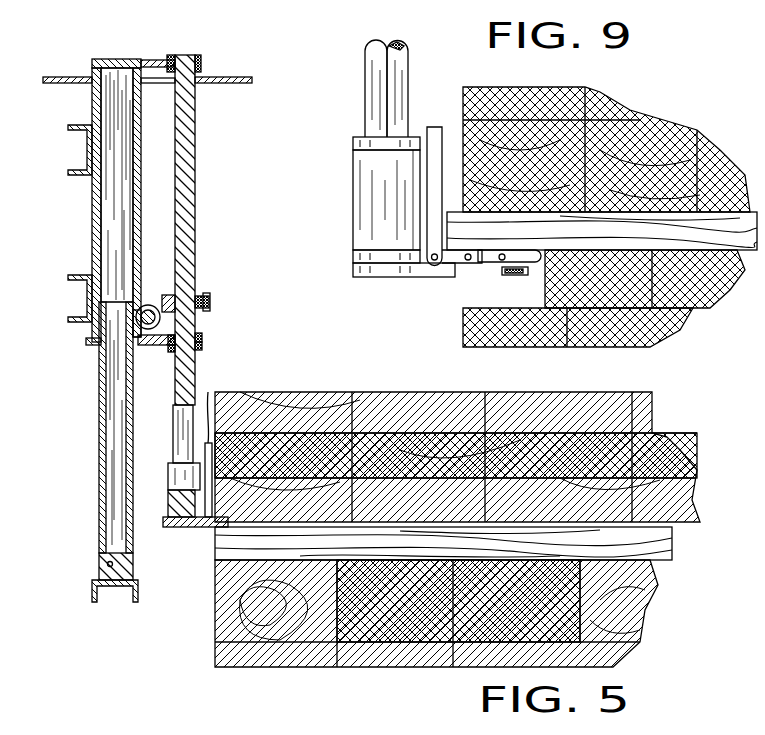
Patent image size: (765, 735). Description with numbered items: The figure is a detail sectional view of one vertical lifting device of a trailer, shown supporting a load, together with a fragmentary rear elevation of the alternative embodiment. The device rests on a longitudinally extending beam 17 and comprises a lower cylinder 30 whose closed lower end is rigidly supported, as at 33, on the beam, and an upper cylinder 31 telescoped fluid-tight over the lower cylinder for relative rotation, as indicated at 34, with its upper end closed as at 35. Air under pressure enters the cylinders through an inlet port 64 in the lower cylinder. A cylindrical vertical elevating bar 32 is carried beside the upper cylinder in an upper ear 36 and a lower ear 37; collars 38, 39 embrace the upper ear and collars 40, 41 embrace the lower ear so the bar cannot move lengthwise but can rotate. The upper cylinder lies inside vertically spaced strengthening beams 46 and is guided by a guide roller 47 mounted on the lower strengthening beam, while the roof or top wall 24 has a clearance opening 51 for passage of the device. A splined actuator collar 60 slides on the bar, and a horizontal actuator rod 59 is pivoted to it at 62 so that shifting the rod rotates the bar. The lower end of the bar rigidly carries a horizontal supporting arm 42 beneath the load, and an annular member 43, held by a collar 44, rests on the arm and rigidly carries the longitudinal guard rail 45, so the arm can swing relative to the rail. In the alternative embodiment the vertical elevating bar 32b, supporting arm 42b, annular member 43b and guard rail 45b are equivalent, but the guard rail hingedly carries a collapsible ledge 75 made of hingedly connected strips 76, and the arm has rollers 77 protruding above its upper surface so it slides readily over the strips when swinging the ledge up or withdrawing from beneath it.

In FIG. 5, the longitudinally extending beam 17 is at (92, 598).
In FIG. 5, the roof or top wall 24 is at (80, 77).
In FIG. 5, the lower cylinder 30 is at (99, 398).
In FIG. 5, the upper cylinder 31 is at (92, 230).
In FIG. 5, the vertical elevating bar 32 is at (195, 248).
In FIG. 5, the lower end support 33 is at (128, 566).
In FIG. 5, the telescoping connection 34 is at (86, 342).
In FIG. 5, the closed upper end 35 is at (128, 40).
In FIG. 5, the upper ear 36 is at (161, 60).
In FIG. 5, the lower ear 37 is at (150, 346).
In FIG. 5, the collar 38 is at (198, 56).
In FIG. 5, the collar 39 is at (202, 66).
In FIG. 5, the collar 40 is at (203, 338).
In FIG. 5, the collar 41 is at (203, 348).
In FIG. 5, the horizontal supporting arm 42 is at (213, 528).
In FIG. 5, the annular member 43 is at (170, 478).
In FIG. 5, the collar 44 is at (173, 441).
In FIG. 5, the guard rail 45 is at (208, 394).
In FIG. 5, the strengthening beam 46 is at (68, 150).
In FIG. 5, the guide roller 47 is at (150, 305).
In FIG. 5, the clearance opening 51 is at (214, 84).
In FIG. 5, the horizontal actuator rod 59 is at (211, 303).
In FIG. 5, the actuator collar 60 is at (176, 300).
In FIG. 5, the pivotal connection 62 is at (209, 298).
In FIG. 5, the inlet port 64 is at (107, 564).
In FIG. 9, the vertical elevating bar 32b is at (365, 60).
In FIG. 9, the supporting arm 42b is at (415, 277).
In FIG. 9, the annular member 43b is at (353, 193).
In FIG. 9, the guard rail 45b is at (434, 127).
In FIG. 9, the collapsible ledge 75 is at (462, 264).
In FIG. 9, the strip 76 is at (497, 264).
In FIG. 9, the roller 77 is at (520, 277).